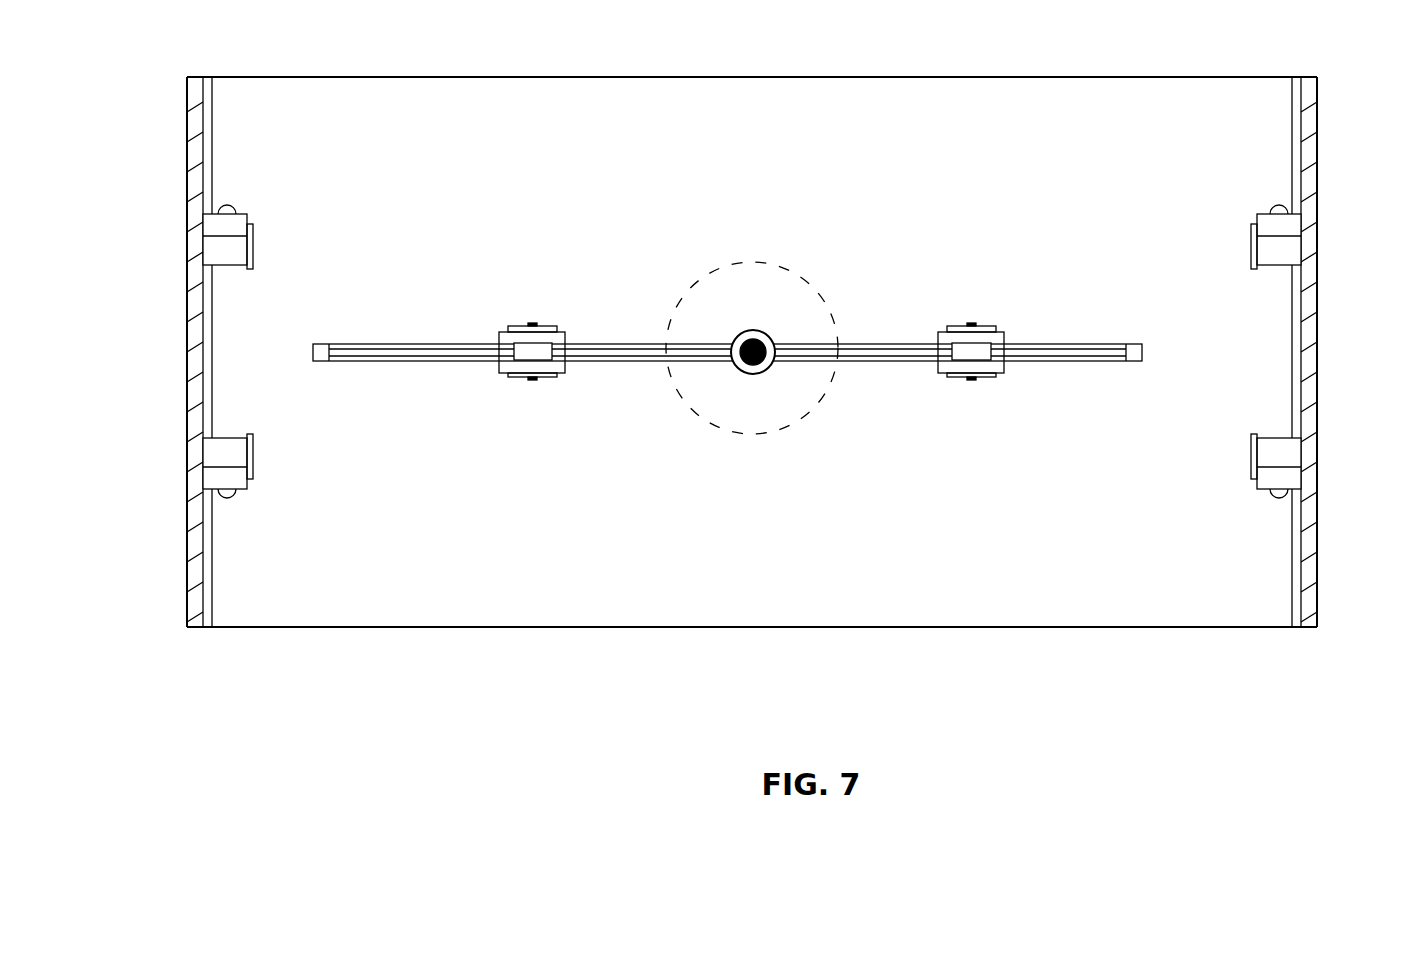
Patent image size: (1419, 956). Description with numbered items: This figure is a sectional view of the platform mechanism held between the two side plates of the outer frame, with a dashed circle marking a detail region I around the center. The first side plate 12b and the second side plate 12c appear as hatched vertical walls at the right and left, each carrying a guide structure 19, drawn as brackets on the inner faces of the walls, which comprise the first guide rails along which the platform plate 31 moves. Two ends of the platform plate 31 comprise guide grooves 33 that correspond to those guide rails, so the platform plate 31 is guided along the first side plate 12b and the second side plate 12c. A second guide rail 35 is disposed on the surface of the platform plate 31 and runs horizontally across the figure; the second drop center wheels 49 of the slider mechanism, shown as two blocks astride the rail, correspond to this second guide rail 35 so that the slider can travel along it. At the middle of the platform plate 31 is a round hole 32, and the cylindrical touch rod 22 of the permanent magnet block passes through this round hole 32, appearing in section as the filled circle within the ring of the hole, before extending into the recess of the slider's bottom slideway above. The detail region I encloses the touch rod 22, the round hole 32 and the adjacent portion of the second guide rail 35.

The first side plate 12b is at (1310, 167).
The second side plate 12c is at (200, 147).
The guide structure 19 is at (285, 190).
The cylindrical touch rod 22 is at (755, 340).
The platform plate 31 is at (662, 570).
The round hole 32 is at (740, 338).
The guide groove 33 is at (752, 351).
The second guide rail 35 is at (413, 352).
The second drop center wheel 49 is at (533, 353).
The detail region I is at (770, 348).